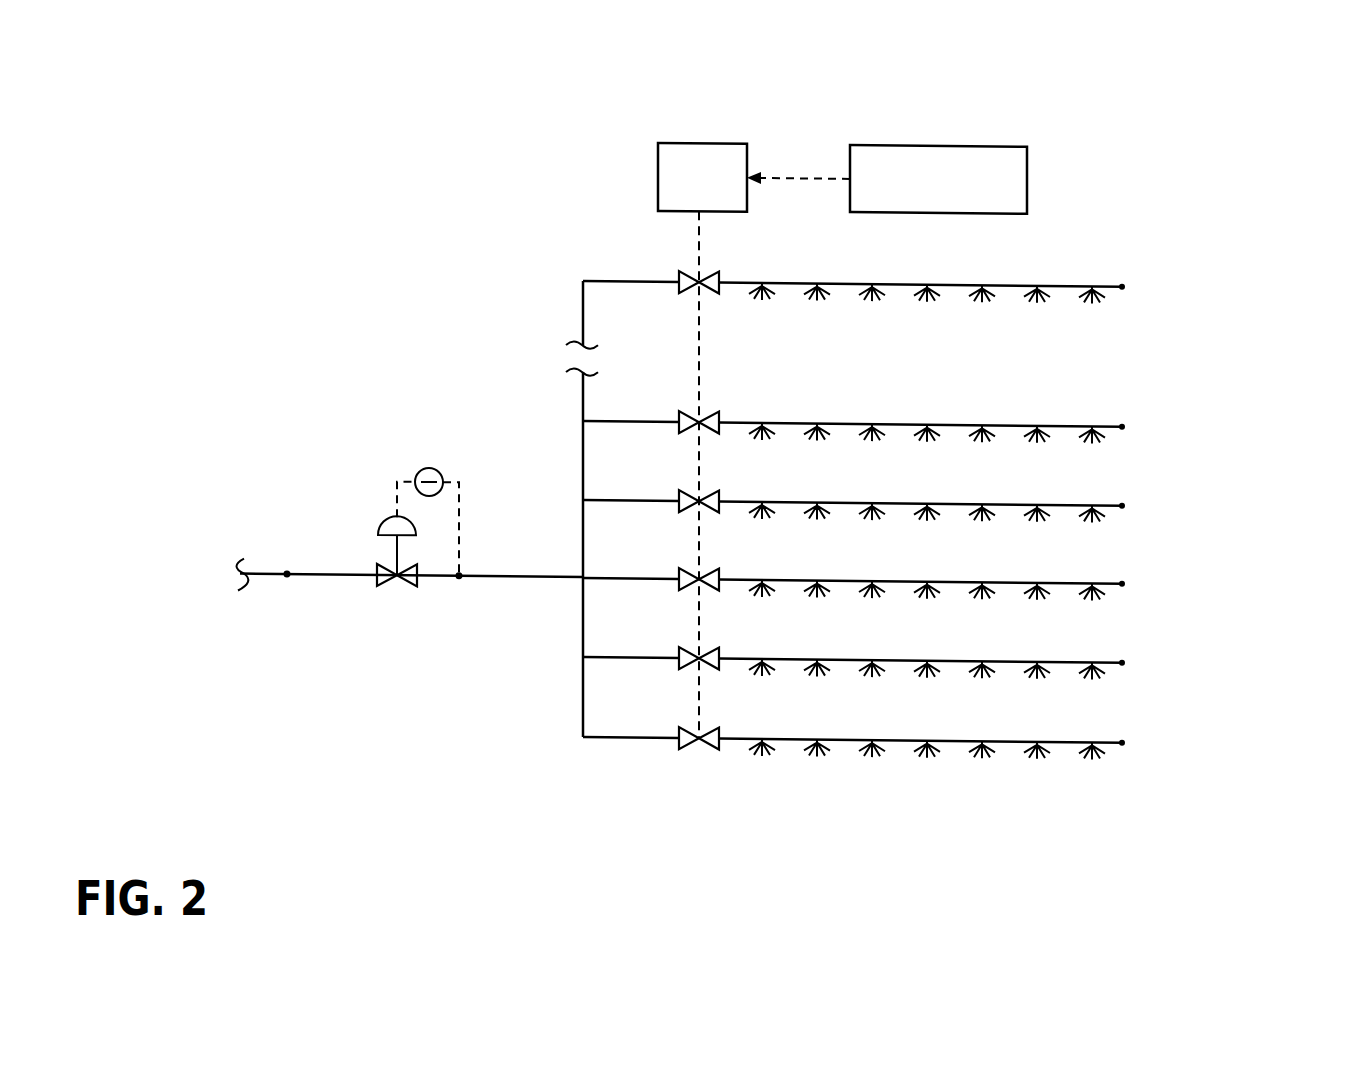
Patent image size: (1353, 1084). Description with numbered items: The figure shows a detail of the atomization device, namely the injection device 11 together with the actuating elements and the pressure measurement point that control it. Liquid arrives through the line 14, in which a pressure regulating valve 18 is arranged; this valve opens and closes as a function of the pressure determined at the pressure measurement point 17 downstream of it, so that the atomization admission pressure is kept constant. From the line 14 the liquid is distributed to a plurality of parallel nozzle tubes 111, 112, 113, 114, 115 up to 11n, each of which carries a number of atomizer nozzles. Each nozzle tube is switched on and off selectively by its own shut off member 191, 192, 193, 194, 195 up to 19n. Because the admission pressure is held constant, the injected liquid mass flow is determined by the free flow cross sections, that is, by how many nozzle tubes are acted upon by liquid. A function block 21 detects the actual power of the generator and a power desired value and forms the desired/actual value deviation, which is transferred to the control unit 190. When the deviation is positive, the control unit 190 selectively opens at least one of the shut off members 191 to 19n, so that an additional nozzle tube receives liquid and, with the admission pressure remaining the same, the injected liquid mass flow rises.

The line 14 is at (287, 571).
The pressure regulating valve 18 is at (377, 583).
The pressure measurement point 17 is at (459, 571).
The control unit 190 is at (702, 441).
The function block 21 is at (948, 137).
The shut off member 19n is at (678, 281).
The shut off member 195 is at (678, 421).
The shut off member 194 is at (678, 500).
The shut off member 193 is at (678, 578).
The shut off member 192 is at (678, 657).
The shut off member 191 is at (678, 737).
The nozzle tube 11n is at (1122, 275).
The nozzle tube 115 is at (1122, 415).
The nozzle tube 114 is at (1122, 494).
The nozzle tube 113 is at (1122, 572).
The nozzle tube 112 is at (1122, 651).
The nozzle tube 111 is at (1122, 731).
The injection device 11 is at (1130, 519).